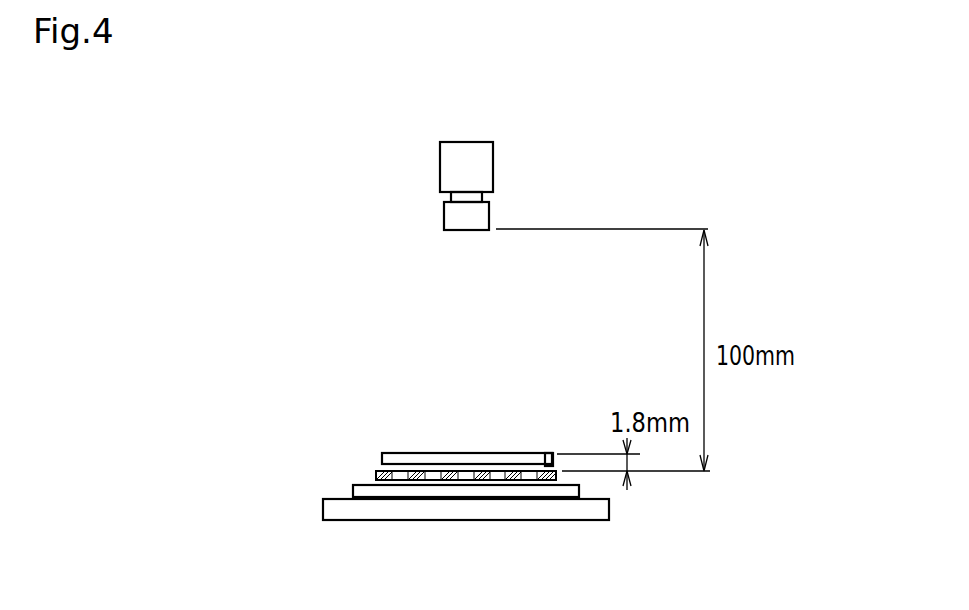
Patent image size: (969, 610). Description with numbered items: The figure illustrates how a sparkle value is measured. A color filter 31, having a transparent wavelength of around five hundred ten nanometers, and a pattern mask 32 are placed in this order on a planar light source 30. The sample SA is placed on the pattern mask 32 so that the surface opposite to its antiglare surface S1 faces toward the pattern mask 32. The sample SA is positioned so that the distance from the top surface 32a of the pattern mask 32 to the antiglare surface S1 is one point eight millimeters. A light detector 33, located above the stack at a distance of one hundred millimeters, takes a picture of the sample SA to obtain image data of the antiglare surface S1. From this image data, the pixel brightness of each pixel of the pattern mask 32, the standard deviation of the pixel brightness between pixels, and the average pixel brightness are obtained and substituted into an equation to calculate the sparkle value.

The planar light source 30 is at (565, 523).
The color filter 31 is at (353, 490).
The pattern mask 32 is at (376, 476).
The top surface of the pattern mask 32a is at (549, 454).
The light detector 33 is at (493, 163).
The antiglare surface S1 is at (505, 452).
The sample SA is at (379, 456).